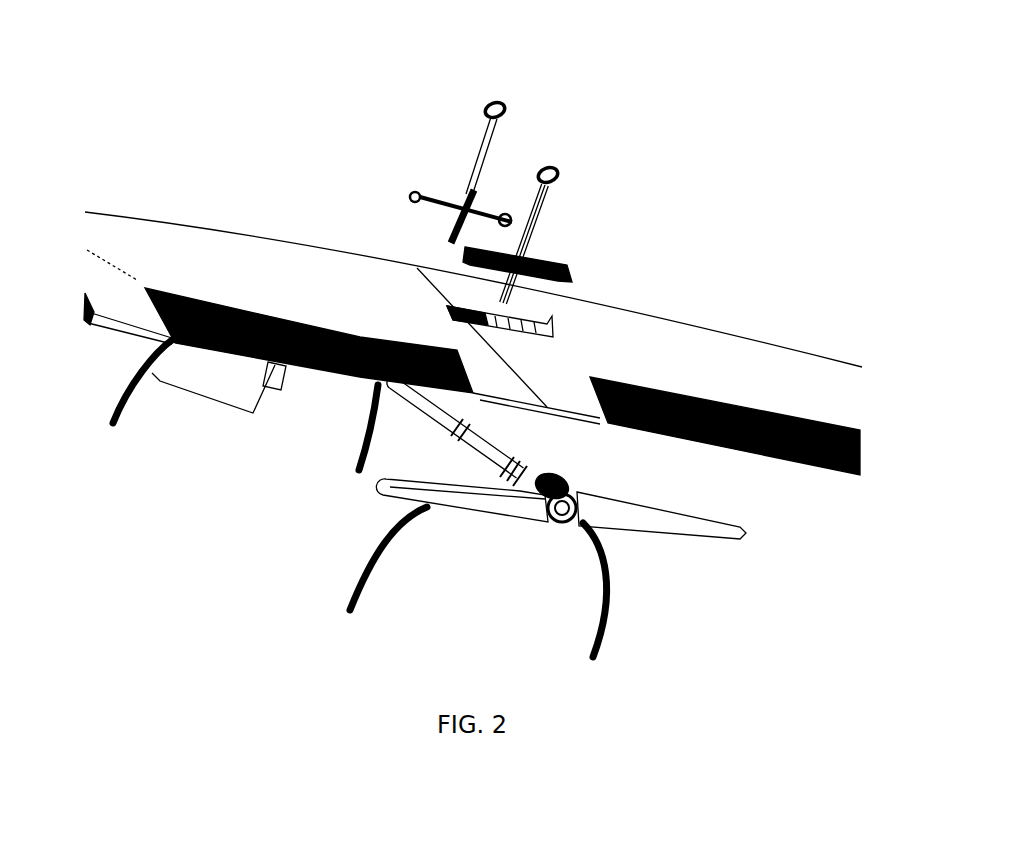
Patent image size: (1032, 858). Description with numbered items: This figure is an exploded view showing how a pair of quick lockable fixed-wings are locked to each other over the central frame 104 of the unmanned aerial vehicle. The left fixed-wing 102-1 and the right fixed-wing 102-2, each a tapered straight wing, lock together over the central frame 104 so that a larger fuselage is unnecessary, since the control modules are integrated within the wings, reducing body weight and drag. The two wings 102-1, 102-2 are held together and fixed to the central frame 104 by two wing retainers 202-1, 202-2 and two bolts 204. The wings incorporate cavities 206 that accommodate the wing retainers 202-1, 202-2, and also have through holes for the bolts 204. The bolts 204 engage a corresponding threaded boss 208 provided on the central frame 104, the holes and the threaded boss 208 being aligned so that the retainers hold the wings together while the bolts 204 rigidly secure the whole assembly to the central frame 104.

The left fixed-wing 102-1 is at (818, 380).
The right fixed-wing 102-2 is at (183, 247).
The central frame 104 is at (468, 456).
The wing retainer 202-1 is at (558, 262).
The wing retainer 202-2 is at (428, 192).
The bolts 204 is at (560, 147).
The cavities 206 is at (466, 309).
The threaded boss 208 is at (470, 420).